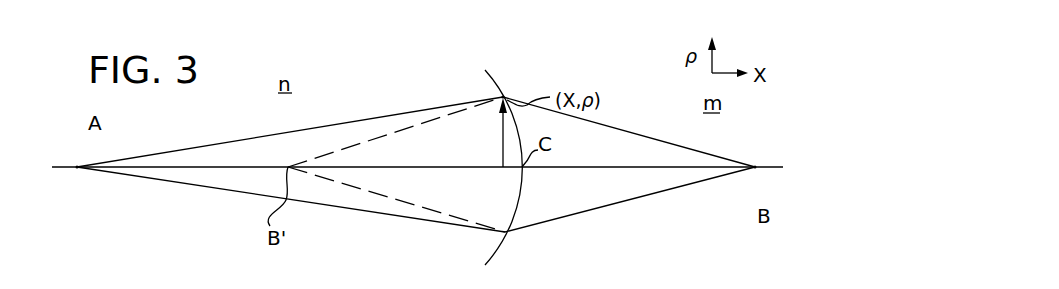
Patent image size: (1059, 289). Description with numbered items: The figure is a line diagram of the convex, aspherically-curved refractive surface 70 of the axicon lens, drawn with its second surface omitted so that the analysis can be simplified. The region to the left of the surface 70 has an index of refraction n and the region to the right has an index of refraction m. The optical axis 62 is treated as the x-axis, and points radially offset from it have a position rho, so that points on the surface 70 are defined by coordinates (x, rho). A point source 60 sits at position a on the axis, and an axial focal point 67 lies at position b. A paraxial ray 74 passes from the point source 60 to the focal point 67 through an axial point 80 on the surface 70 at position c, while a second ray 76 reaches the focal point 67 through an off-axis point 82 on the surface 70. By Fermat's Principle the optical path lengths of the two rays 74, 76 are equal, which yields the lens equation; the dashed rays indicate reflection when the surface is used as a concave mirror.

The point source 60 is at (93, 135).
The optical axis 62 is at (635, 168).
The axial focal point 67 is at (767, 202).
The nonconical refractive surface 70 is at (509, 258).
The paraxial ray 74 is at (218, 168).
The ray 76 is at (213, 146).
The axial point 80 is at (522, 167).
The off-axis point 82 is at (503, 97).